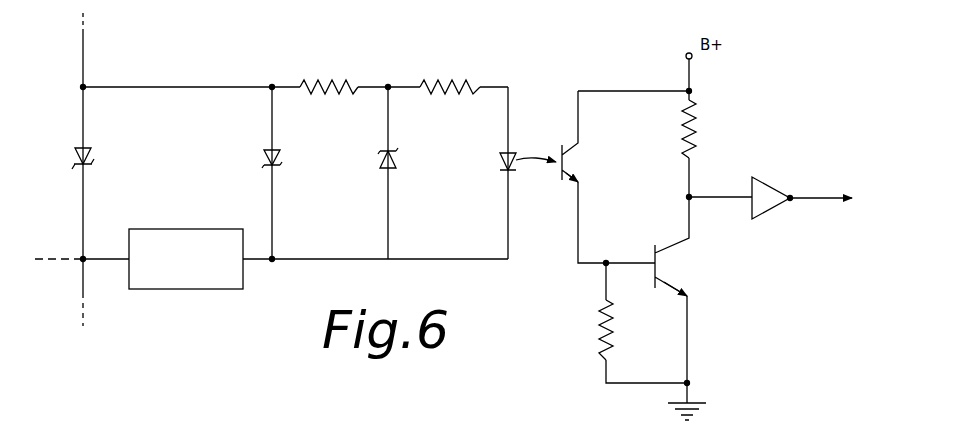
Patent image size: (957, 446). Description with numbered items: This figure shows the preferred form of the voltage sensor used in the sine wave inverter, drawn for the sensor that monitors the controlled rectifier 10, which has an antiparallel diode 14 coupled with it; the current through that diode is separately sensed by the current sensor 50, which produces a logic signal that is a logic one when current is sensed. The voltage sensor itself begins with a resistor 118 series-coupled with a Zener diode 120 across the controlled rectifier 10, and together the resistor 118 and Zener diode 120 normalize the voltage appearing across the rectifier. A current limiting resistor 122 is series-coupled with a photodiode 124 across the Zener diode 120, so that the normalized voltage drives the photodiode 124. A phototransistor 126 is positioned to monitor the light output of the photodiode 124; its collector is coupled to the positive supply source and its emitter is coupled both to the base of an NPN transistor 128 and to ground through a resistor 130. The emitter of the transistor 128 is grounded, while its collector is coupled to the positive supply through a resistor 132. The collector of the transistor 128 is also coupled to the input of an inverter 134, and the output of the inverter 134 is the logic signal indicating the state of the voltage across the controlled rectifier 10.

The controlled rectifier 10 is at (90, 150).
The antiparallel diode 14 is at (262, 163).
The current sensor 50 is at (220, 283).
The resistor 118 is at (332, 84).
The Zener diode 120 is at (377, 160).
The current limiting resistor 122 is at (470, 86).
The photodiode 124 is at (500, 160).
The phototransistor 126 is at (556, 172).
The NPN transistor 128 is at (655, 252).
The resistor 130 is at (600, 330).
The resistor 132 is at (695, 136).
The inverter 134 is at (762, 188).